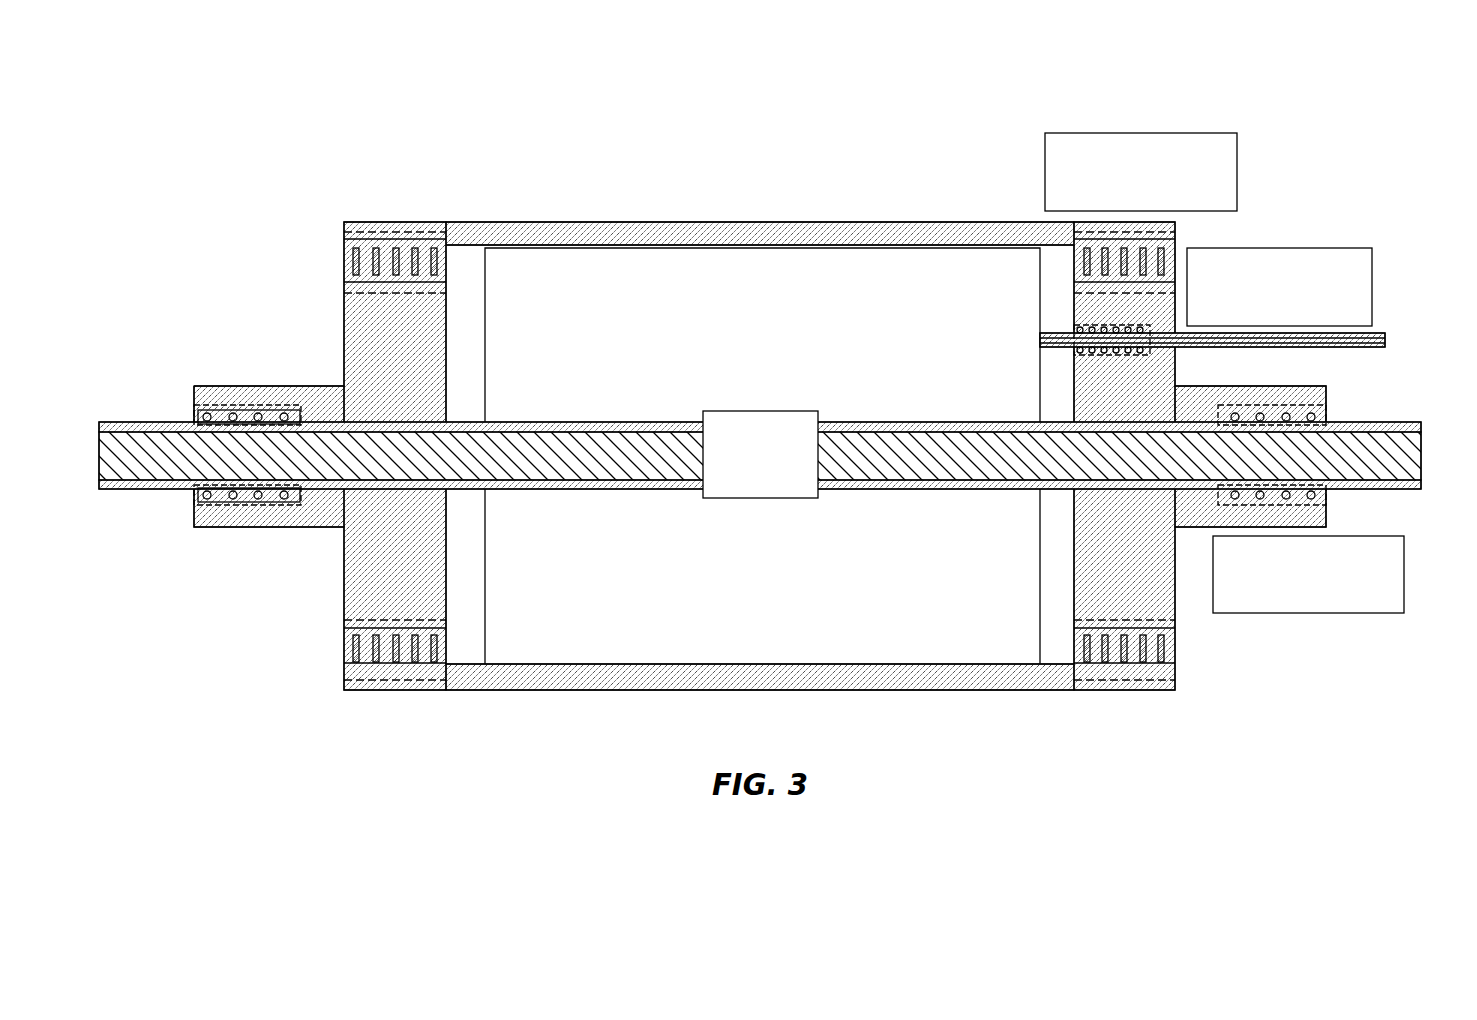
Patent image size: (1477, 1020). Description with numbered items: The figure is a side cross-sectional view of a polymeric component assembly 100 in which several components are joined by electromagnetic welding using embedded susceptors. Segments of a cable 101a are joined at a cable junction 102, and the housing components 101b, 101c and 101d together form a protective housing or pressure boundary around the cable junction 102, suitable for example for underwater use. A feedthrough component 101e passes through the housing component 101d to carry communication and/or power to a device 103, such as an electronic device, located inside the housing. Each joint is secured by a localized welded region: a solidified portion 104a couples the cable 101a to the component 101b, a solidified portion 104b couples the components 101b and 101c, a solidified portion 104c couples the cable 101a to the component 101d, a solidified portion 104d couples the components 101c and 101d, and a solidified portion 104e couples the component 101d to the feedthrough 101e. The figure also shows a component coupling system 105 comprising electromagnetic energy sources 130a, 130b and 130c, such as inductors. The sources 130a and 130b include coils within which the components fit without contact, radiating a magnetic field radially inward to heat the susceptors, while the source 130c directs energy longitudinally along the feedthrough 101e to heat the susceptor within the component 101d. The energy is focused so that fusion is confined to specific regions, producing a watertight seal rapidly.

The component assembly 100 is at (782, 384).
The cable 101a is at (145, 422).
The component 101b is at (298, 386).
The component 101c is at (757, 222).
The component 101d is at (1296, 386).
The feedthrough component 101e is at (1385, 340).
The cable junction 102 is at (742, 466).
The device 103 is at (742, 341).
The solidified portion 104a is at (207, 412).
The solidified portion 104b is at (388, 235).
The solidified portion 104c is at (1305, 505).
The solidified portion 104d is at (1163, 233).
The solidified portion 104e is at (1080, 325).
The component coupling system 105 is at (1251, 374).
The electromagnetic energy source 130a is at (1303, 613).
The electromagnetic energy source 130b is at (1237, 162).
The electromagnetic energy source 130c is at (1372, 277).